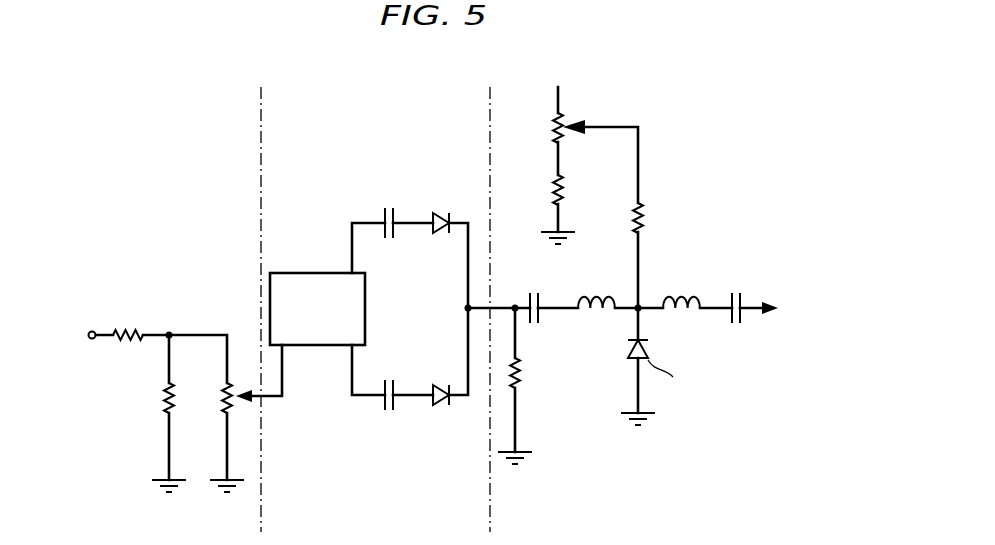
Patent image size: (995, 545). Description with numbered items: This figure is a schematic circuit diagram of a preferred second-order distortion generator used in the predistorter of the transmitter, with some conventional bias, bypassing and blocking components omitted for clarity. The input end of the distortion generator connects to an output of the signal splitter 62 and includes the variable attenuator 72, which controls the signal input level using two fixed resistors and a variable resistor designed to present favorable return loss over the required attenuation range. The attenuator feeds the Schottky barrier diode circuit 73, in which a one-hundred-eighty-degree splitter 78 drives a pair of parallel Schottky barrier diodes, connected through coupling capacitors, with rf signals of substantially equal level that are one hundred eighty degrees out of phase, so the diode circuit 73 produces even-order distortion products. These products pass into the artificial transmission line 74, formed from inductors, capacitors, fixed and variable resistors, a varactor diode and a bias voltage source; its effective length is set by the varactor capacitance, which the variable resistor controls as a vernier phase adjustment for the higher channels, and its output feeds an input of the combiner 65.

The signal splitter 62 is at (49, 373).
The combiner 65 is at (834, 345).
The variable attenuator 72 is at (132, 165).
The Schottky barrier diode circuit 73 is at (383, 168).
The artificial transmission line 74 is at (756, 172).
The 180 degree splitter 78 is at (305, 273).